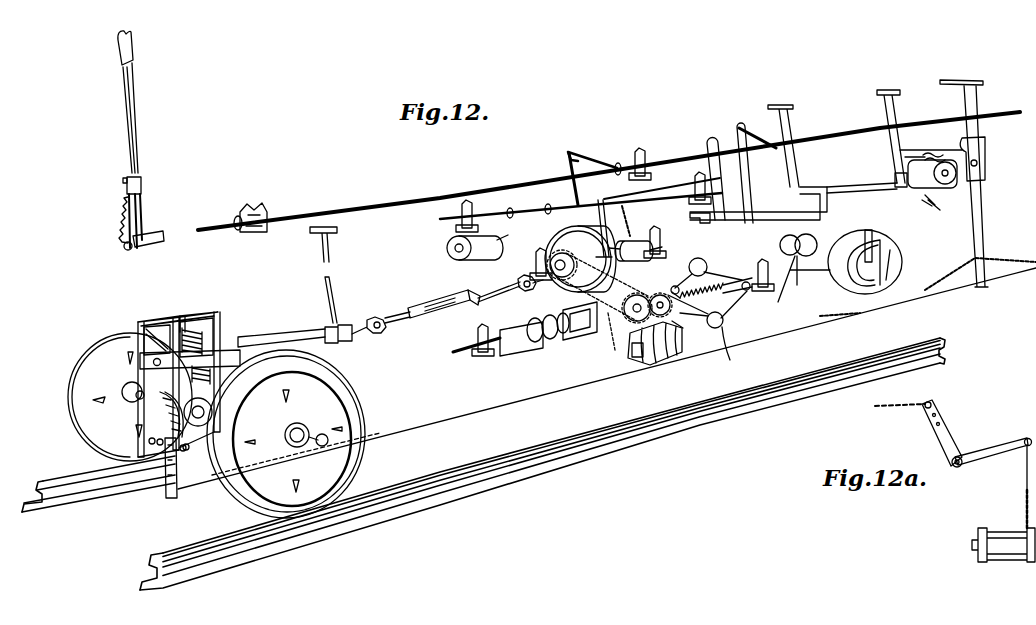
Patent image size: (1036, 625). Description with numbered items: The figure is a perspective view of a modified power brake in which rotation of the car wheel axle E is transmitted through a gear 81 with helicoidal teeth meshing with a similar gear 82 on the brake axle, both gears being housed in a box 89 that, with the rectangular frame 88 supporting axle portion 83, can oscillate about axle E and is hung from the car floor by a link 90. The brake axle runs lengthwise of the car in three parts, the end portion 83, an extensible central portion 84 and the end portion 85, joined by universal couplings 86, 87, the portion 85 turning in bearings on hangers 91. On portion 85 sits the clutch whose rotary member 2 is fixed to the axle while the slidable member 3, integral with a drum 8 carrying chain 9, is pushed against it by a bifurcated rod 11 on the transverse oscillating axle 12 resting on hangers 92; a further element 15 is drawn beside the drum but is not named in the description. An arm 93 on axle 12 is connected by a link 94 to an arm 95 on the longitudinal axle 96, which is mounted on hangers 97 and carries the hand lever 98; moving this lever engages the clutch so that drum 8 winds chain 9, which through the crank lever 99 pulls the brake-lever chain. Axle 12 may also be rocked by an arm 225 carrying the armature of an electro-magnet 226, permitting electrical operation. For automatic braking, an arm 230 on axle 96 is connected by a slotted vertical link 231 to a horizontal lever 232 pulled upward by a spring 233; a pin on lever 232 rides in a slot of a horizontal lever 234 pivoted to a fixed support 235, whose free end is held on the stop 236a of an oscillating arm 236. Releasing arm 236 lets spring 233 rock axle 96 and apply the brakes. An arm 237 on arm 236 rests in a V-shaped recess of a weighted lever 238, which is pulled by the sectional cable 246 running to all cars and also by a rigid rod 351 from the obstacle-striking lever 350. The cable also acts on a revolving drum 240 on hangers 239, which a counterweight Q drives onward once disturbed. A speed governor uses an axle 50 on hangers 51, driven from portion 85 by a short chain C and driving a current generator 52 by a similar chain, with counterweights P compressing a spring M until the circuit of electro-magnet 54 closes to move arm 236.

In FIG. 12, the hand lever 98 is at (140, 118).
In FIG. 12, the hangers 97 is at (253, 237).
In FIG. 12, the oscillating axle 96 is at (386, 206).
In FIG. 12, the box 89 is at (146, 320).
In FIG. 12, the gear 82 is at (201, 343).
In FIG. 12, the gear 81 is at (160, 410).
In FIG. 12, the lever 350 is at (171, 486).
In FIG. 12, the rigid rod 351 is at (452, 416).
In FIG. 12, the axle portion 83 is at (263, 342).
In FIG. 12, the rectangular frame 88 is at (343, 343).
In FIG. 12, the universal coupling 86 is at (373, 314).
In FIG. 12, the central axle portion 84 is at (454, 306).
In FIG. 12, the universal coupling 87 is at (517, 279).
In FIG. 12, the link 90 is at (333, 292).
In FIG. 12, the hangers 91 is at (536, 262).
In FIG. 12, the axle portion 85 is at (552, 280).
In FIG. 12, the clutch member 2 is at (558, 244).
In FIG. 12, the clutch member 3 is at (578, 228).
In FIG. 12, the arm 225 is at (458, 230).
In FIG. 12, the electro-magnet 226 is at (470, 250).
In FIG. 12, the arm 93 is at (562, 208).
In FIG. 12, the link 94 is at (580, 184).
In FIG. 12, the arm 95 is at (592, 160).
In FIG. 12, the crank lever 99 is at (648, 158).
In FIG. 12A, the crank lever 99 is at (997, 458).
In FIG. 12, the hangers 92 is at (455, 215).
In FIG. 12, the oscillating axle 12 is at (652, 191).
In FIG. 12, the bifurcated rod 11 is at (606, 206).
In FIG. 12, the chain 9 is at (629, 220).
In FIG. 12A, the chain 9 is at (1025, 495).
In FIG. 12, the drum 8 is at (646, 261).
In FIG. 12A, the drum 8 is at (1010, 562).
In FIG. 12, the bracket 15 is at (658, 240).
In FIG. 12, the spring 233 is at (697, 209).
In FIG. 12, the current generator 52 is at (646, 360).
In FIG. 12, the axle 50 is at (719, 332).
In FIG. 12, the chain C is at (684, 329).
In FIG. 12, the counterweight P is at (732, 354).
In FIG. 12, the hangers 51 is at (753, 262).
In FIG. 12, the counterweight Q is at (801, 278).
In FIG. 12, the revolving drum 240 is at (897, 262).
In FIG. 12, the hangers 239 is at (865, 232).
In FIG. 12, the cable 246 is at (1007, 241).
In FIG. 12, the spring M is at (932, 175).
In FIG. 12, the electro-magnet 54 is at (935, 195).
In FIG. 12, the arm 237 is at (931, 144).
In FIG. 12, the oscillating arm 236 is at (898, 152).
In FIG. 12, the stop 236a is at (900, 188).
In FIG. 12, the horizontal lever 234 is at (845, 185).
In FIG. 12, the fixed support 235 is at (790, 122).
In FIG. 12, the vertical link 231 is at (750, 174).
In FIG. 12, the horizontal lever 232 is at (768, 214).
In FIG. 12, the arm 230 is at (759, 131).
In FIG. 12, the lever 238 is at (978, 208).
In FIG. 12, the car wheel axle E is at (322, 447).